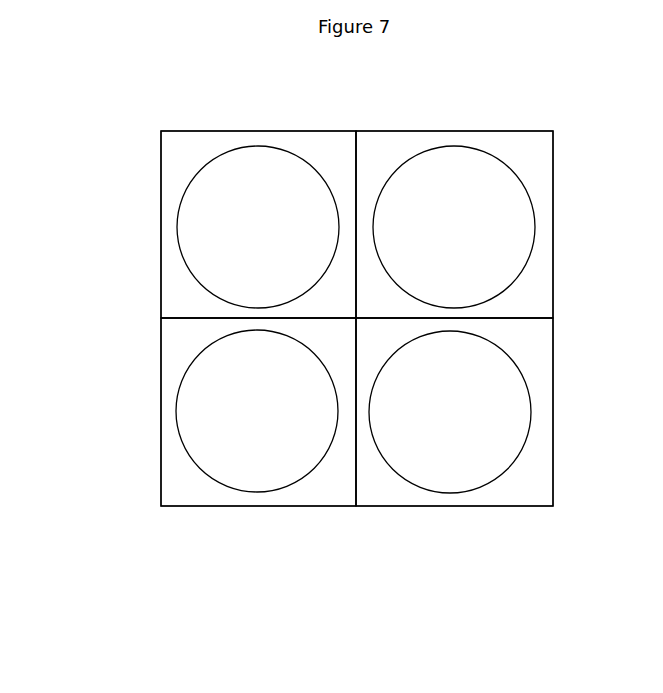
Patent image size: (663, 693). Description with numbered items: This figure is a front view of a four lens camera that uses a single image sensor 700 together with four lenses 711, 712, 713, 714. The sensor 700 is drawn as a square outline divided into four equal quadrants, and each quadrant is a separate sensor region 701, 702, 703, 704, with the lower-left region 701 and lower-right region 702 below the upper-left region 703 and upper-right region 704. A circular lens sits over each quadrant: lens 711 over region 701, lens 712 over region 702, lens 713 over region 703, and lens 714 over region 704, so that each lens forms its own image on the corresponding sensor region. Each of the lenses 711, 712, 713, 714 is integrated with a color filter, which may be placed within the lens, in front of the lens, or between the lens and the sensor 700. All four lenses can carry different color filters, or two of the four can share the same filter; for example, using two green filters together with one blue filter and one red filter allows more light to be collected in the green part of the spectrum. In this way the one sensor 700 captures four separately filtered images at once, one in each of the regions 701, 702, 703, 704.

The sensor 700 is at (160, 435).
The sensor region 701 is at (340, 488).
The sensor region 702 is at (533, 488).
The sensor region 703 is at (197, 148).
The sensor region 704 is at (408, 140).
The lens 711 is at (220, 380).
The lens 712 is at (480, 403).
The lens 713 is at (233, 217).
The lens 714 is at (493, 240).